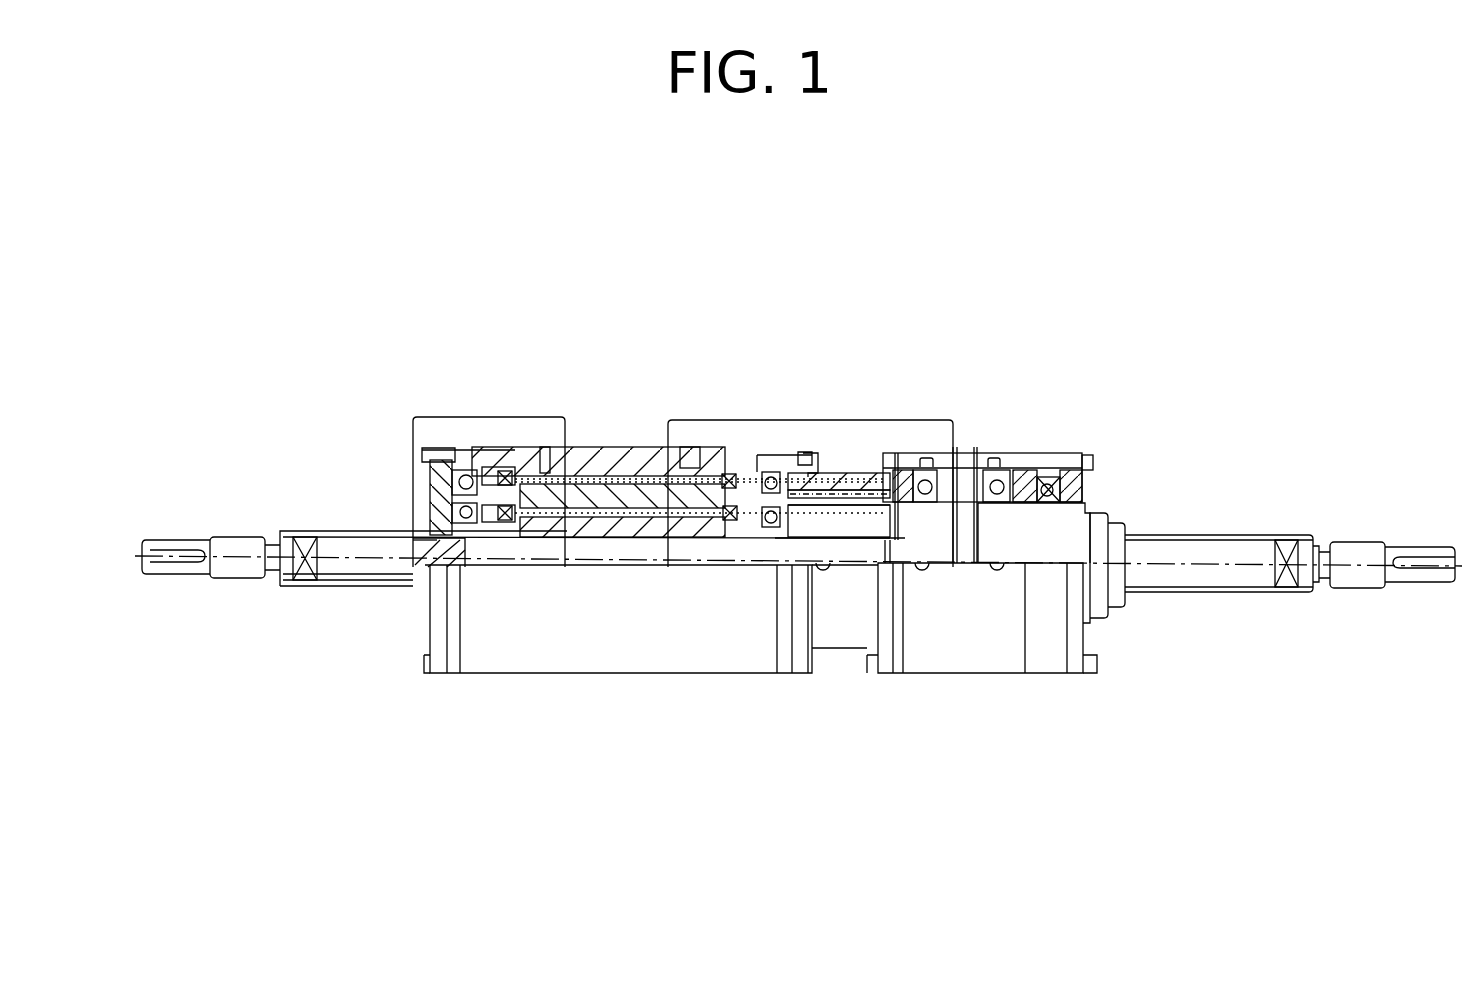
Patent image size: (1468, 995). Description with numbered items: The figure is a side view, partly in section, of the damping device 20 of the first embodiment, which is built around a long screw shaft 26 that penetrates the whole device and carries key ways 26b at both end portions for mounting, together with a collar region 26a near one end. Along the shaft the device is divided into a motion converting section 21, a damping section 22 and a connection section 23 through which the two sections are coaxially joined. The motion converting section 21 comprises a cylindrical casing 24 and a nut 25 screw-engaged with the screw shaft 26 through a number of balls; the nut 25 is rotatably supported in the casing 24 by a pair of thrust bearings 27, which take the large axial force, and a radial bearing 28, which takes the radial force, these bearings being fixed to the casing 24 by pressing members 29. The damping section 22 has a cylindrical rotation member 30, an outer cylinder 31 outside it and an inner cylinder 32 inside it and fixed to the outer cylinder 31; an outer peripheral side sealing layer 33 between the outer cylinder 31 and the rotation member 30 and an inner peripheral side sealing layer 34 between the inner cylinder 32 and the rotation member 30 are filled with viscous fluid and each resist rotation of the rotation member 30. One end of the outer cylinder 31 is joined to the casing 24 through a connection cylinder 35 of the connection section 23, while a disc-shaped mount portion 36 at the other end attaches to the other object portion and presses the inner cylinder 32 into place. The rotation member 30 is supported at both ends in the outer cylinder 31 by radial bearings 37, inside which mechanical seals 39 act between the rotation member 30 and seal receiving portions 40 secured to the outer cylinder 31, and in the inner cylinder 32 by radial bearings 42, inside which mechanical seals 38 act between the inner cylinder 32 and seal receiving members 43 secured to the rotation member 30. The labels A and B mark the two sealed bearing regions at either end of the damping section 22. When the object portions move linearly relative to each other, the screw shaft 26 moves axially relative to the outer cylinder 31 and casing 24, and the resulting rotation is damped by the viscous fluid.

The damping device 20 is at (874, 340).
The motion converting section 21 is at (970, 690).
The damping section 22 is at (596, 683).
The connection section 23 is at (845, 688).
The cylindrical casing 24 is at (955, 478).
The nut 25 is at (1097, 515).
The screw shaft 26 is at (1175, 552).
The shaft collar 26a is at (1260, 537).
The key way 26b is at (165, 545).
The thrust bearing 27 is at (905, 495).
The radial bearing 28 is at (1065, 455).
The pressing member 29 is at (885, 470).
The cylindrical rotation member 30 is at (583, 458).
The outer cylinder 31 is at (627, 458).
The inner cylinder 32 is at (538, 458).
The outer peripheral side sealing layer 33 is at (647, 458).
The inner peripheral side sealing layer 34 is at (676, 515).
The connection cylinder 35 is at (830, 476).
The mount portion 36 is at (425, 495).
The radial bearing 37 is at (448, 458).
The mechanical seal 38 is at (507, 520).
The mechanical seal 39 is at (503, 458).
The seal receiving portion 40 is at (492, 455).
The radial bearing 42 is at (437, 540).
The seal receiving member 43 is at (460, 573).
The section A is at (447, 452).
The section B is at (805, 420).